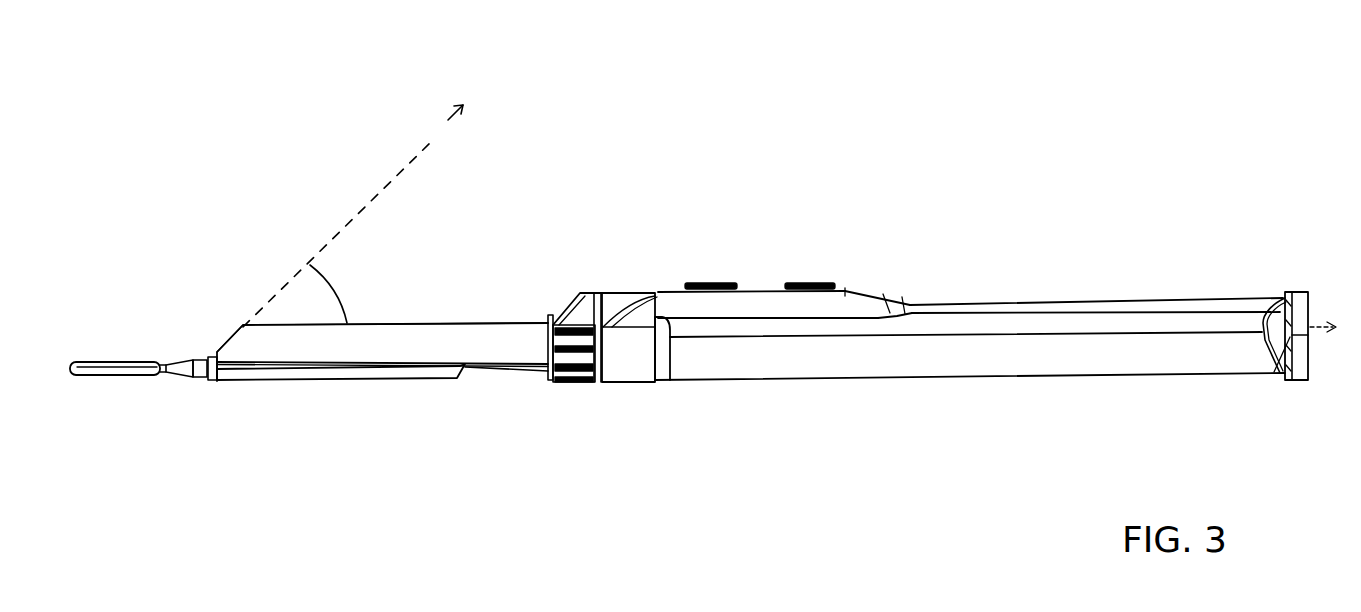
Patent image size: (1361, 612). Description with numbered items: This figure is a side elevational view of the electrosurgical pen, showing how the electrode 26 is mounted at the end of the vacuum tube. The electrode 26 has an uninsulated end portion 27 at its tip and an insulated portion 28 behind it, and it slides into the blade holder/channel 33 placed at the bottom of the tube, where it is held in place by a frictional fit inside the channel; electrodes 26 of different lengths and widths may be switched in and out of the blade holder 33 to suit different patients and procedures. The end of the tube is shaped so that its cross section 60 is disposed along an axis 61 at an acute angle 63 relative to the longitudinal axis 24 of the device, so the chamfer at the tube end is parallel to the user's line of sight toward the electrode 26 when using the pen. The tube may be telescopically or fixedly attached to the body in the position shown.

The longitudinal axis 24 is at (1322, 327).
The electrode 26 is at (147, 315).
The uninsulated end portion 27 is at (113, 367).
The insulated portion 28 is at (195, 378).
The blade holder/channel 33 is at (320, 372).
The cross section 60 is at (227, 327).
The axis 61 is at (430, 142).
The acute angle 63 is at (342, 285).